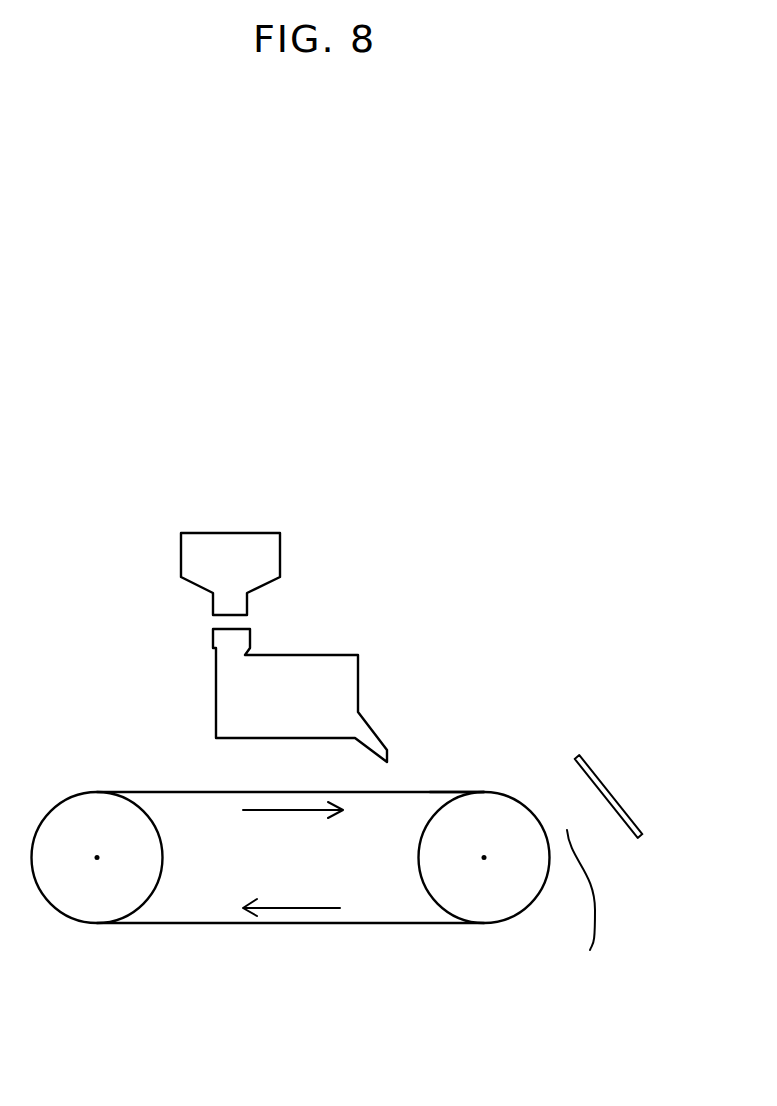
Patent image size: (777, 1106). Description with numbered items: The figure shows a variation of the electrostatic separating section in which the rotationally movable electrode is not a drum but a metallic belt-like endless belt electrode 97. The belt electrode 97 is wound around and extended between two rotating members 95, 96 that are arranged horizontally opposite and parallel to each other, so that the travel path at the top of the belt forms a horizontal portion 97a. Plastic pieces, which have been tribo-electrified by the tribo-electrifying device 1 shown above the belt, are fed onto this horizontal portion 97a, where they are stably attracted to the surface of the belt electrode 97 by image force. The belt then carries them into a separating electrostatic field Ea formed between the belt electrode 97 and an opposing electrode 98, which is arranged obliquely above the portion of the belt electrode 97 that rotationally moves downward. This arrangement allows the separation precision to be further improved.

The tribo-electrifying device 1 is at (337, 663).
The rotating member 95 is at (453, 905).
The rotating member 96 is at (132, 883).
The belt electrode 97 is at (288, 925).
The horizontal portion 97a is at (443, 792).
The opposing electrode 98 is at (600, 780).
The separating electrostatic field Ea is at (583, 907).